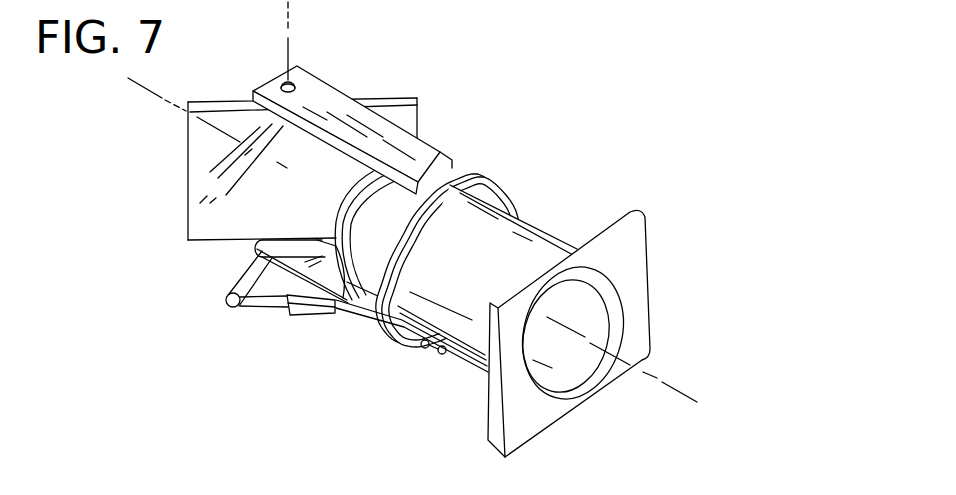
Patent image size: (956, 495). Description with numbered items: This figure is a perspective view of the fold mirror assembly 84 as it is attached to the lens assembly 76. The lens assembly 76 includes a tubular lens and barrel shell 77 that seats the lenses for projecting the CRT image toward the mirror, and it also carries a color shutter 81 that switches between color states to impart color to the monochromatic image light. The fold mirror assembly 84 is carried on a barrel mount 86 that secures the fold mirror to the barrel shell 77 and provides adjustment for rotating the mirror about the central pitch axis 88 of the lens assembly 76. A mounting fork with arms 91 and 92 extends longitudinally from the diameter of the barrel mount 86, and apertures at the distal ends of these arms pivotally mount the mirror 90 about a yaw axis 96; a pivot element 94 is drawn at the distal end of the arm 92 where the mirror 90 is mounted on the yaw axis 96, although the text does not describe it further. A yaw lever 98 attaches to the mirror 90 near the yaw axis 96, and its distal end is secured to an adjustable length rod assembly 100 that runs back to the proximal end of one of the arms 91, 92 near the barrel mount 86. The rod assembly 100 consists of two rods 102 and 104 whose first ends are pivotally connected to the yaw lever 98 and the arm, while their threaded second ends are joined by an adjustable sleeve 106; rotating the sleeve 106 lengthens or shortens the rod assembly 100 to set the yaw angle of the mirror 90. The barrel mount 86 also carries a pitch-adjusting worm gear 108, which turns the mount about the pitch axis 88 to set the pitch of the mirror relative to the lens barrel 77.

The lens assembly 76 is at (454, 379).
The tubular lens and barrel shell 77 is at (520, 222).
The color shutter 81 is at (344, 184).
The fold mirror assembly 84 is at (444, 120).
The barrel mount 86 is at (484, 182).
The central pitch axis 88 is at (157, 97).
The mirror 90 is at (187, 178).
The arm 91 is at (253, 262).
The arm 92 is at (318, 84).
The pivot pin 94 is at (286, 83).
The yaw axis 96 is at (288, 3).
The yaw lever 98 is at (229, 284).
The adjustable length rod assembly 100 is at (238, 332).
The rod 102 is at (275, 310).
The rod 104 is at (353, 313).
The adjustable sleeve 106 is at (307, 317).
The pitch-adjusting worm gear 108 is at (427, 343).